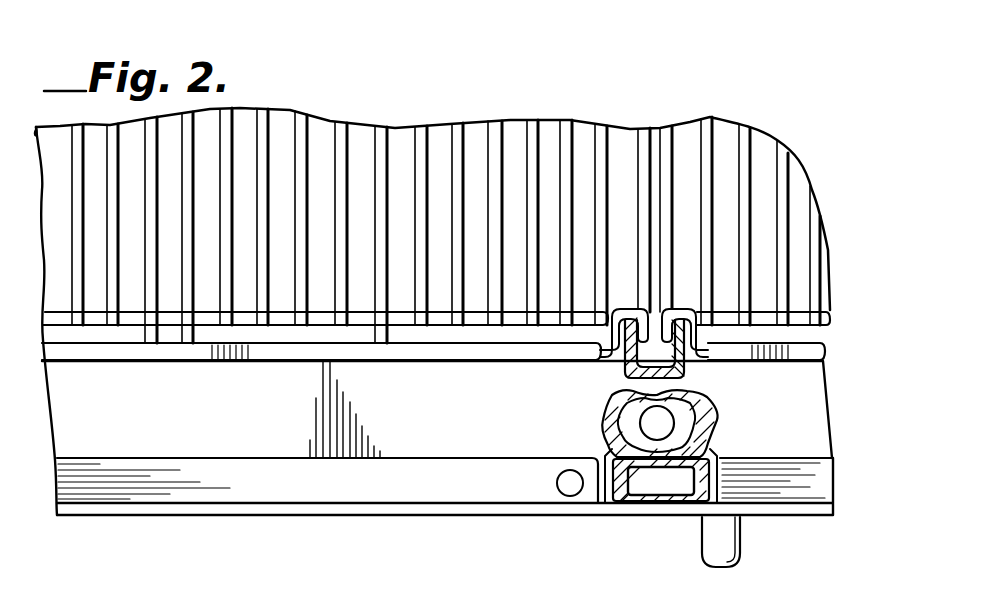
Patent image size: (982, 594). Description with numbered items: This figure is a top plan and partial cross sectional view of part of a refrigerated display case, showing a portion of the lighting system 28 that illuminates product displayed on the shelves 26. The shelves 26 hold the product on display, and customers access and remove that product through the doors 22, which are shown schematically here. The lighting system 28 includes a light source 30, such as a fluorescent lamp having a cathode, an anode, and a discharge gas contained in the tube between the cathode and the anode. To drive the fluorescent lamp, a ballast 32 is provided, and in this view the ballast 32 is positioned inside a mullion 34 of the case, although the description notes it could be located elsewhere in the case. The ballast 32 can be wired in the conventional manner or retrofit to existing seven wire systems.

The doors 22 is at (372, 495).
The shelves 26 is at (747, 153).
The lighting system 28 is at (786, 413).
The light source 30 is at (637, 418).
The ballast 32 is at (643, 488).
The mullion 34 is at (672, 498).